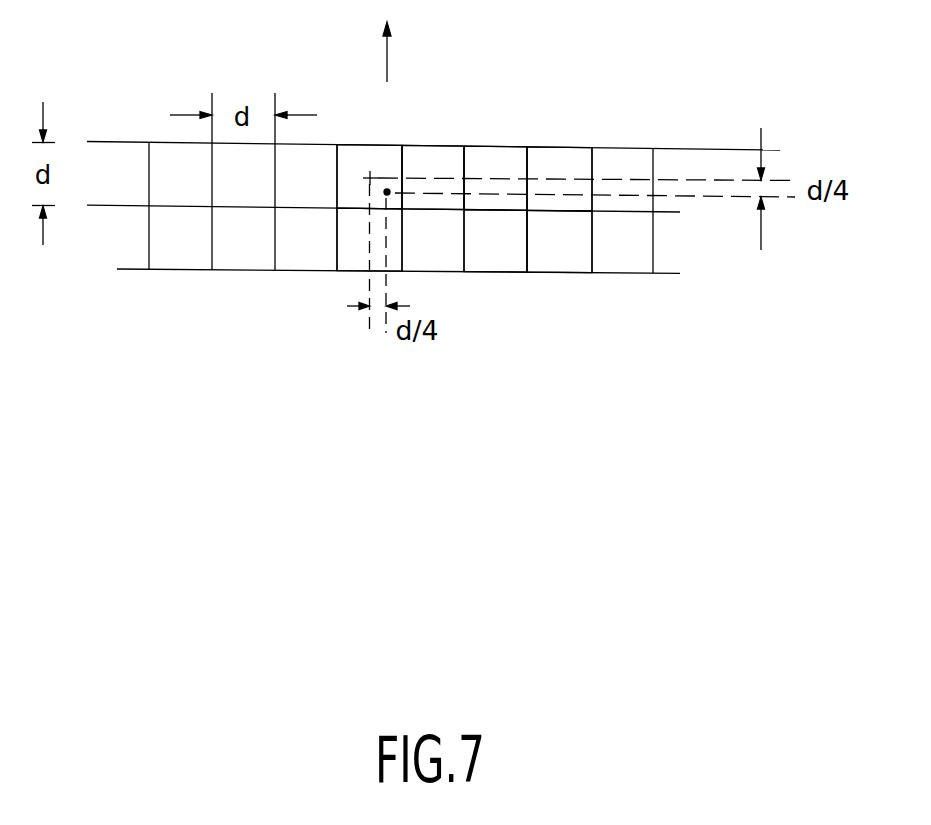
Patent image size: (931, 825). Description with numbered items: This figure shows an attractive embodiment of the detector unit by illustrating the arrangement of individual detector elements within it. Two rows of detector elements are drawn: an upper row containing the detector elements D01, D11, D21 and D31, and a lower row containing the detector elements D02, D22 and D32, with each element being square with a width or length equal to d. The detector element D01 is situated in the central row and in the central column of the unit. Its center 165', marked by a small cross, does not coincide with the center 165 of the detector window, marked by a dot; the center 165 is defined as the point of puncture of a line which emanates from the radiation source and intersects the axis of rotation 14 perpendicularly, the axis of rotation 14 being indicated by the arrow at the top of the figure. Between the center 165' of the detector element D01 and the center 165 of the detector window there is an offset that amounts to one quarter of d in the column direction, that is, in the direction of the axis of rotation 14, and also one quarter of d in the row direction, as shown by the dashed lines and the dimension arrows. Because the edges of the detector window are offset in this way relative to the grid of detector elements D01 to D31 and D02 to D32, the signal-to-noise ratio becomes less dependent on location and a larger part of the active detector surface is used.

The axis of rotation 14 is at (387, 60).
The center of the detector window 165 is at (263, 265).
The center of detector element D01 165' is at (347, 120).
The detector element D01 is at (391, 162).
The detector element D11 is at (428, 160).
The detector element D21 is at (492, 160).
The detector element D31 is at (557, 160).
The detector element D02 is at (352, 262).
The detector element D22 is at (492, 253).
The detector element D32 is at (557, 257).